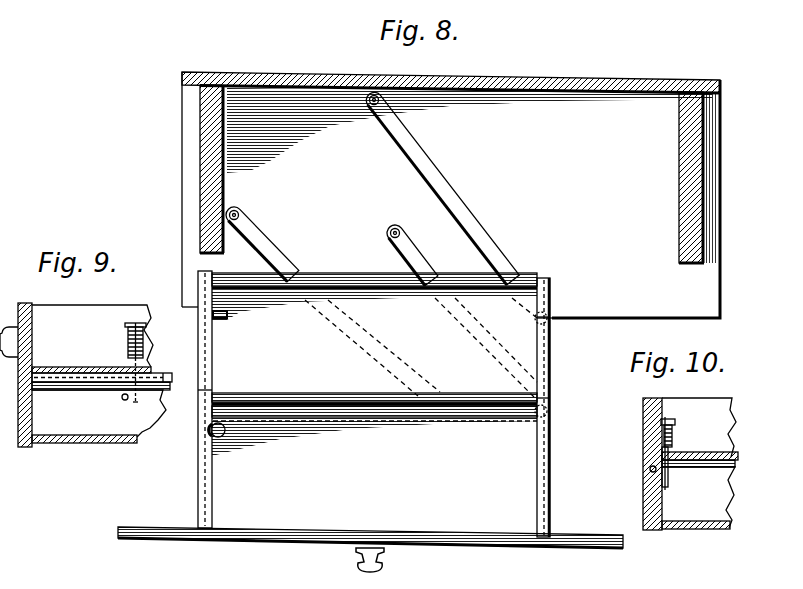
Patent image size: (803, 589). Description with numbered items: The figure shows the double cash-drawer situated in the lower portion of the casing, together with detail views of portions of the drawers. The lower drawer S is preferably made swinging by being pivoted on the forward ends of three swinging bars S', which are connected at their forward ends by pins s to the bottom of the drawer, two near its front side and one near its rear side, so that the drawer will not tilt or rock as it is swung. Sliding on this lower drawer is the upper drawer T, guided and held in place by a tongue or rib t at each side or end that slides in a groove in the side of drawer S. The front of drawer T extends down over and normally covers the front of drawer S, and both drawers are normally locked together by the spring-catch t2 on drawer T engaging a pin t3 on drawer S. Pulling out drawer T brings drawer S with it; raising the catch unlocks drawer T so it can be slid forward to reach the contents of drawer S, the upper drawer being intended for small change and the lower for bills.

In FIG. 8, the lower drawer S is at (374, 404).
In FIG. 9, the lower drawer S is at (99, 416).
In FIG. 10, the lower drawer S is at (698, 498).
In FIG. 8, the swinging bars S' is at (372, 188).
In FIG. 8, the pins s is at (551, 314).
In FIG. 8, the upper drawer T is at (370, 482).
In FIG. 9, the upper drawer T is at (102, 347).
In FIG. 10, the upper drawer T is at (700, 432).
In FIG. 10, the tongue or rib t is at (651, 468).
In FIG. 9, the spring-catch t2 is at (143, 324).
In FIG. 10, the spring-catch t2 is at (670, 427).
In FIG. 9, the pin t3 is at (123, 399).
In FIG. 10, the pin t3 is at (668, 483).